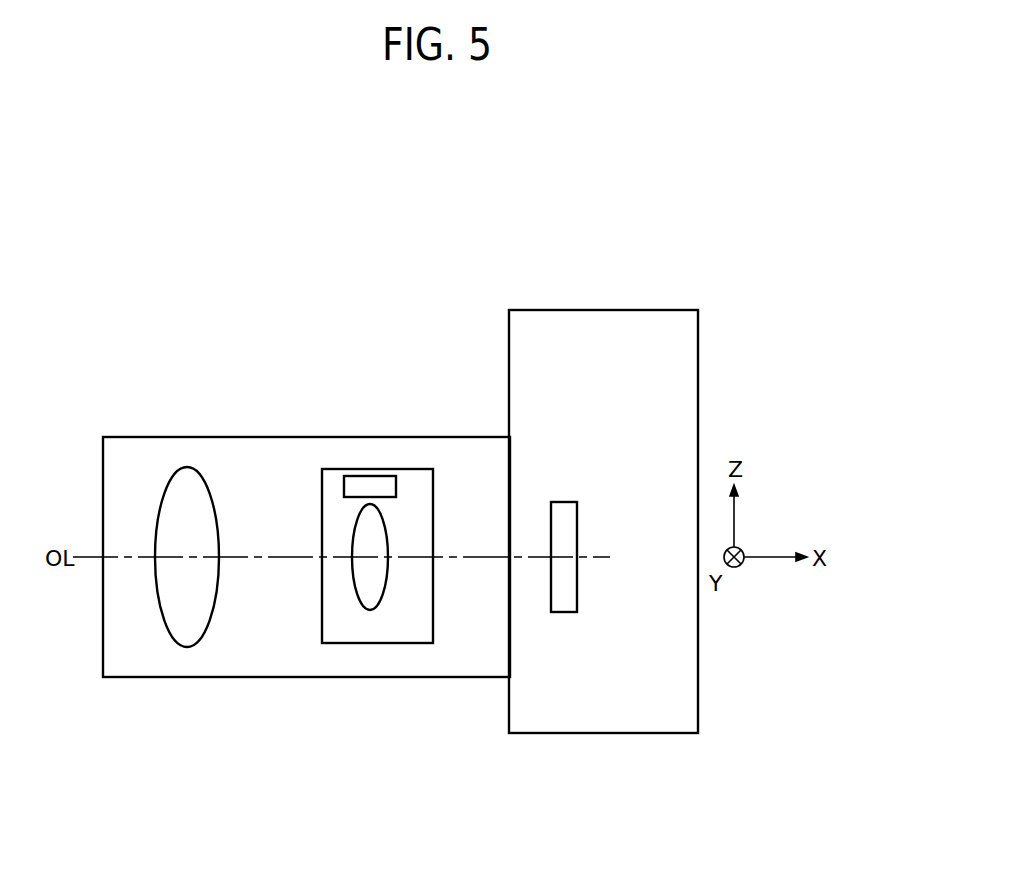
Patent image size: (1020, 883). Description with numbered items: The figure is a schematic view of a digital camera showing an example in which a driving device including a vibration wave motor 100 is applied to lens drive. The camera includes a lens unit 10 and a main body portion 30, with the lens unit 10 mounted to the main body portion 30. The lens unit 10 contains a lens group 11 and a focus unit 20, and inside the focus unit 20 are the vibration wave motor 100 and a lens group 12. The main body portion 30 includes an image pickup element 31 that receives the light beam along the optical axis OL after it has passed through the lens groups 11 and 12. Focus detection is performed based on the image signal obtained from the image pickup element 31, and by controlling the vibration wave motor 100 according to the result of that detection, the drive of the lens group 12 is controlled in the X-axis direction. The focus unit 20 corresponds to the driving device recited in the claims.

The lens unit 10 is at (122, 450).
The lens group 11 is at (188, 625).
The lens group 12 is at (370, 595).
The focus unit 20 is at (334, 485).
The vibration wave motor 100 is at (380, 485).
The main body portion 30 is at (604, 323).
The image pickup element 31 is at (566, 597).